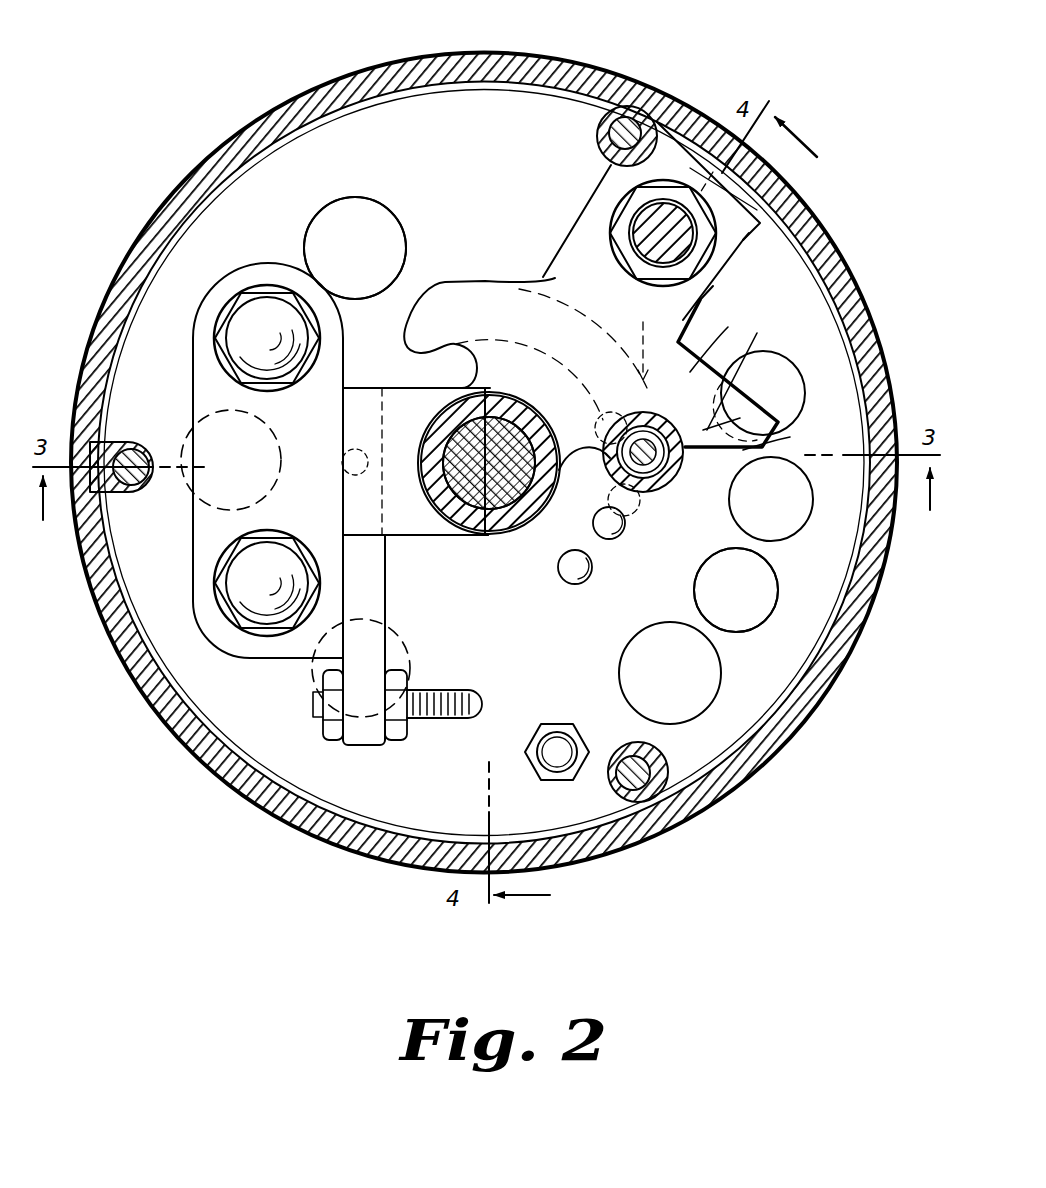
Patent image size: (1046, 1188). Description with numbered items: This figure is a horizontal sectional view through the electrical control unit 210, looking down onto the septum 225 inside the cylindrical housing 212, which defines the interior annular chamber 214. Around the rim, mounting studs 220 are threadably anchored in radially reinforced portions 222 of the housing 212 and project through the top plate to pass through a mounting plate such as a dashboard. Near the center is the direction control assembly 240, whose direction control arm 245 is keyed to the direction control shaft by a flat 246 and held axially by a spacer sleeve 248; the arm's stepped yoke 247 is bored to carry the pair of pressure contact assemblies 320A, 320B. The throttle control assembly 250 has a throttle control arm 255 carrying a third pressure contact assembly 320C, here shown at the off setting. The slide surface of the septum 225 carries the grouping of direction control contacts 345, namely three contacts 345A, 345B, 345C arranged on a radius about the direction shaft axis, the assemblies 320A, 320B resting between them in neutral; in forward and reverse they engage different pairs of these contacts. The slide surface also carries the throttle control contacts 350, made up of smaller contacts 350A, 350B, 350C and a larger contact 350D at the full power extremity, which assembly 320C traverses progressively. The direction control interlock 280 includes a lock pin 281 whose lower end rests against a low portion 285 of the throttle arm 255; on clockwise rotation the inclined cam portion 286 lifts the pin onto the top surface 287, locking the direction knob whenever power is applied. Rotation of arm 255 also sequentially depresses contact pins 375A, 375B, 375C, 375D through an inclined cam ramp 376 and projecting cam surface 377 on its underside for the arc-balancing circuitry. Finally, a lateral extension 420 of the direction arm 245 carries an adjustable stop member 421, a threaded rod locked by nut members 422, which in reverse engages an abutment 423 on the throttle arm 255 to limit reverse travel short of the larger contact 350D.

The electrical control unit 210 is at (660, 50).
The cylindrical housing 212 is at (813, 212).
The interior annular chamber 214 is at (838, 249).
The mounting studs 220 is at (84, 550).
The radially reinforced portions 222 is at (112, 357).
The septum 225 is at (446, 807).
The direction control assembly 240 is at (244, 258).
The direction control arm 245 is at (353, 390).
The flat 246 is at (430, 540).
The stepped yoke 247 is at (217, 537).
The spacer sleeve 248 is at (483, 411).
The throttle control assembly 250 is at (604, 184).
The throttle control arm 255 is at (727, 245).
The direction control interlock 280 is at (787, 540).
The lock pin 281 is at (663, 458).
The low portion 285 is at (703, 430).
The inclined cam portion 286 is at (724, 339).
The top surface 287 is at (706, 298).
The pressure contact assembly 320A is at (216, 300).
The pressure contact assembly 320B is at (222, 626).
The pressure contact assembly 320C is at (724, 217).
The direction control contacts 345 is at (370, 190).
The direction control contact 345A is at (392, 236).
The direction control contact 345B is at (187, 428).
The direction control contact 345C is at (312, 670).
The throttle control contacts 350 is at (748, 646).
The throttle control contact 350A is at (790, 375).
The throttle control contact 350B is at (802, 503).
The throttle control contact 350C is at (714, 592).
The larger contact 350D is at (634, 662).
The contact pin 375A is at (608, 405).
The contact pin 375B is at (630, 505).
The contact pin 375C is at (620, 532).
The contact pin 375D is at (590, 576).
The inclined cam ramp 376 is at (640, 337).
The projecting cam surface 377 is at (578, 305).
The lateral extension 420 is at (365, 590).
The adjustable stop member 421 is at (425, 719).
The nut members 422 is at (393, 742).
The abutment 423 is at (790, 437).